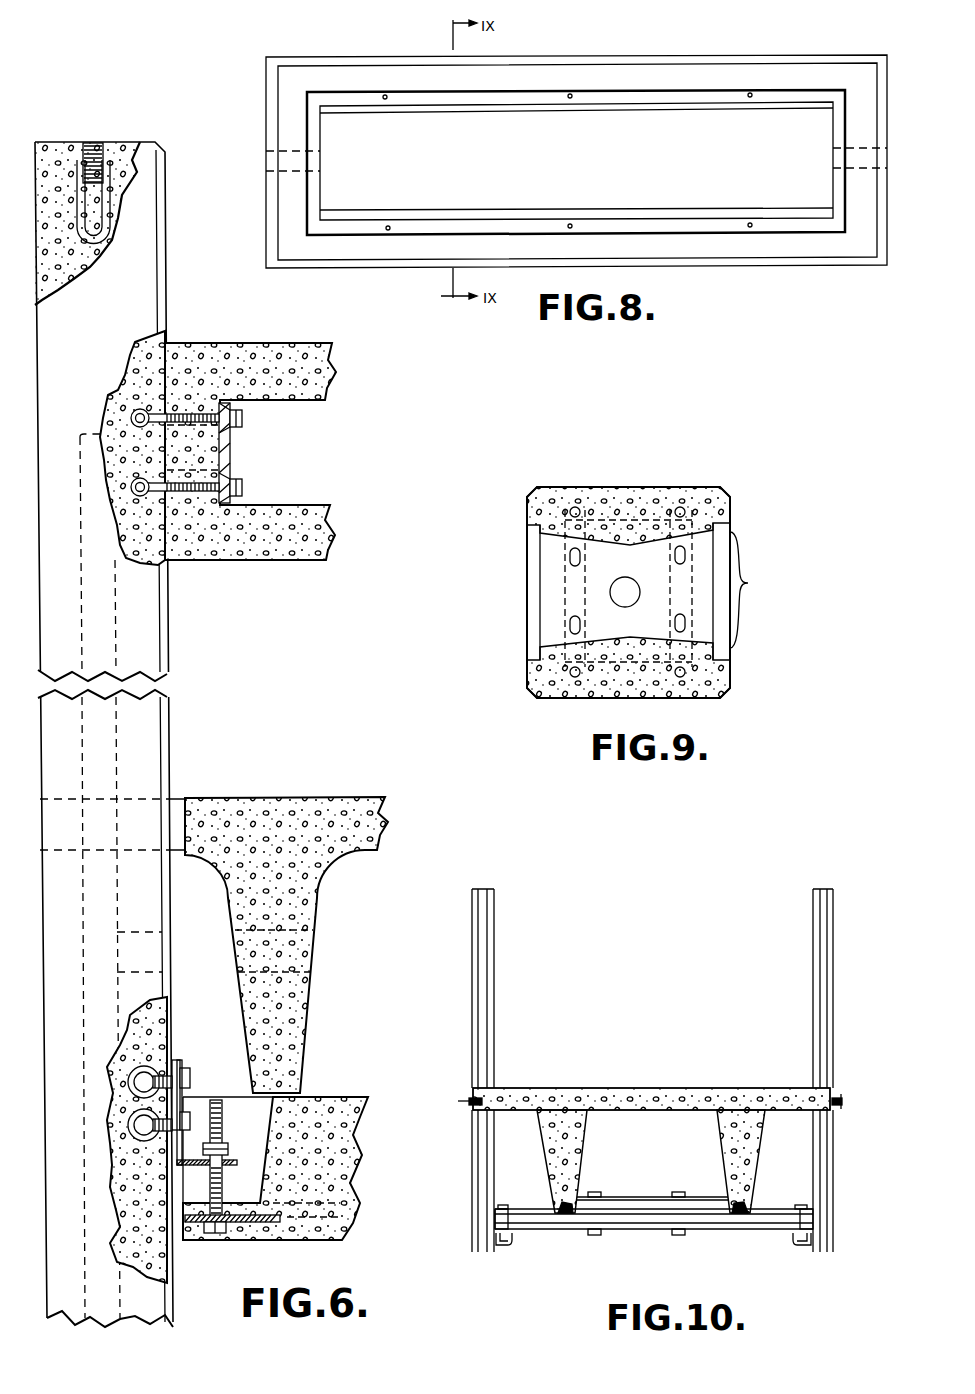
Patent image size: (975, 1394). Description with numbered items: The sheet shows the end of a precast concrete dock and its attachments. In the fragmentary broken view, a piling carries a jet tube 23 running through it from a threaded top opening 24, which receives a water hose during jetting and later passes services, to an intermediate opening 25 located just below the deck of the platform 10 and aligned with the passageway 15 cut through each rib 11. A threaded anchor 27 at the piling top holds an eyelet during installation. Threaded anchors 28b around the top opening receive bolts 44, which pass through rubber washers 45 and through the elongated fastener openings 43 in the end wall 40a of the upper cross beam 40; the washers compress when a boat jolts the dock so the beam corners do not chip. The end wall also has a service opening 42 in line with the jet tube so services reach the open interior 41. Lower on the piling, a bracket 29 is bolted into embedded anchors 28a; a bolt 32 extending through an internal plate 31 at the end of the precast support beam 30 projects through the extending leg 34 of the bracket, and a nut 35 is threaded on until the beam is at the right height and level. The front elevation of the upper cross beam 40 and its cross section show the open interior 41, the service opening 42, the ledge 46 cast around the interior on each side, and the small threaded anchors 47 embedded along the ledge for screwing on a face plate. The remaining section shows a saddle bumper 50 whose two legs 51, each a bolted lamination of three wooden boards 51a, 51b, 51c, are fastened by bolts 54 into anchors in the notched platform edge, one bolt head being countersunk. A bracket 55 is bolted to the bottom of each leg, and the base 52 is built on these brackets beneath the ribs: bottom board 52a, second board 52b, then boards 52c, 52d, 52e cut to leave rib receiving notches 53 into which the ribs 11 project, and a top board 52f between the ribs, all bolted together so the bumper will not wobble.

In FIG. 10, the platform 10 is at (655, 1088).
In FIG. 6, the platform 10 is at (308, 794).
In FIG. 10, the rib 11 is at (584, 1143).
In FIG. 6, the rib 11 is at (317, 903).
In FIG. 6, the passageway 15 is at (297, 960).
In FIG. 6, the jet tube 23 is at (100, 750).
In FIG. 6, the top opening 24 is at (105, 430).
In FIG. 6, the intermediate opening 25 is at (140, 955).
In FIG. 6, the threaded anchor 27 is at (93, 143).
In FIG. 6, the anchor 28a is at (140, 1086).
In FIG. 6, the threaded anchor 28b is at (133, 408).
In FIG. 6, the bracket 29 is at (177, 1061).
In FIG. 6, the support beam 30 is at (318, 1092).
In FIG. 6, the internal plate 31 is at (233, 1215).
In FIG. 6, the bolt 32 is at (222, 1120).
In FIG. 6, the angle bracket 34 is at (267, 1097).
In FIG. 6, the nut 35 is at (228, 1152).
In FIG. 9, the upper cross beam 40 is at (712, 461).
In FIG. 6, the upper cross beam 40 is at (222, 342).
In FIG. 8, the end wall 40a is at (859, 110).
In FIG. 9, the end wall 40a is at (645, 634).
In FIG. 8, the open interior 41 is at (540, 162).
In FIG. 9, the open interior 41 is at (670, 592).
In FIG. 6, the open interior 41 is at (309, 450).
In FIG. 8, the service opening 42 is at (320, 159).
In FIG. 9, the service opening 42 is at (626, 577).
In FIG. 6, the service opening 42 is at (220, 448).
In FIG. 9, the fastener opening 43 is at (570, 554).
In FIG. 6, the bolt 44 is at (243, 418).
In FIG. 6, the rubber washer 45 is at (228, 479).
In FIG. 8, the ledge 46 is at (636, 96).
In FIG. 9, the ledge 46 is at (527, 530).
In FIG. 8, the threaded anchor 47 is at (385, 95).
In FIG. 10, the saddle bumper 50 is at (670, 1049).
In FIG. 10, the leg 51 is at (494, 1008).
In FIG. 10, the wooden board 51a is at (475, 888).
In FIG. 10, the wooden board 51b is at (485, 888).
In FIG. 10, the wooden board 51c is at (494, 893).
In FIG. 10, the base 52 is at (687, 1220).
In FIG. 10, the board 52a is at (618, 1230).
In FIG. 10, the board 52b is at (645, 1222).
In FIG. 10, the board 52c is at (533, 1213).
In FIG. 10, the board 52d is at (608, 1213).
In FIG. 10, the board 52e is at (777, 1210).
In FIG. 10, the top board 52f is at (667, 1169).
In FIG. 10, the rib receiving notch 53 is at (566, 1206).
In FIG. 10, the bolt 54 is at (469, 1102).
In FIG. 10, the bracket 55 is at (505, 1232).